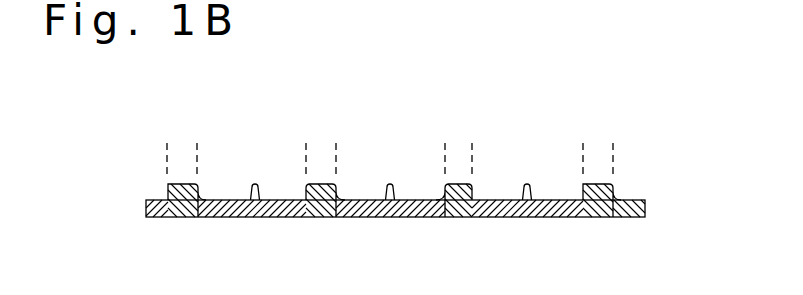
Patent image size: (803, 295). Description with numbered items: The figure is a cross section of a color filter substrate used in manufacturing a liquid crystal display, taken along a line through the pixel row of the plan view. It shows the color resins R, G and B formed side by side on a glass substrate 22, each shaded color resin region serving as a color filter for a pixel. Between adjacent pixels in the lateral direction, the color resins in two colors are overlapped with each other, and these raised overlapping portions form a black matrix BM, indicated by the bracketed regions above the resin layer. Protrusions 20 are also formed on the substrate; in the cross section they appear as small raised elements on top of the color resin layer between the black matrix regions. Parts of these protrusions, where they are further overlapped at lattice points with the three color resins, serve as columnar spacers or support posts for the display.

The protrusion 20 is at (255, 183).
The glass substrate 22 is at (145, 233).
The black matrix BM is at (315, 150).
The color resin R is at (168, 191).
The color resin G is at (403, 217).
The color resin B is at (165, 217).